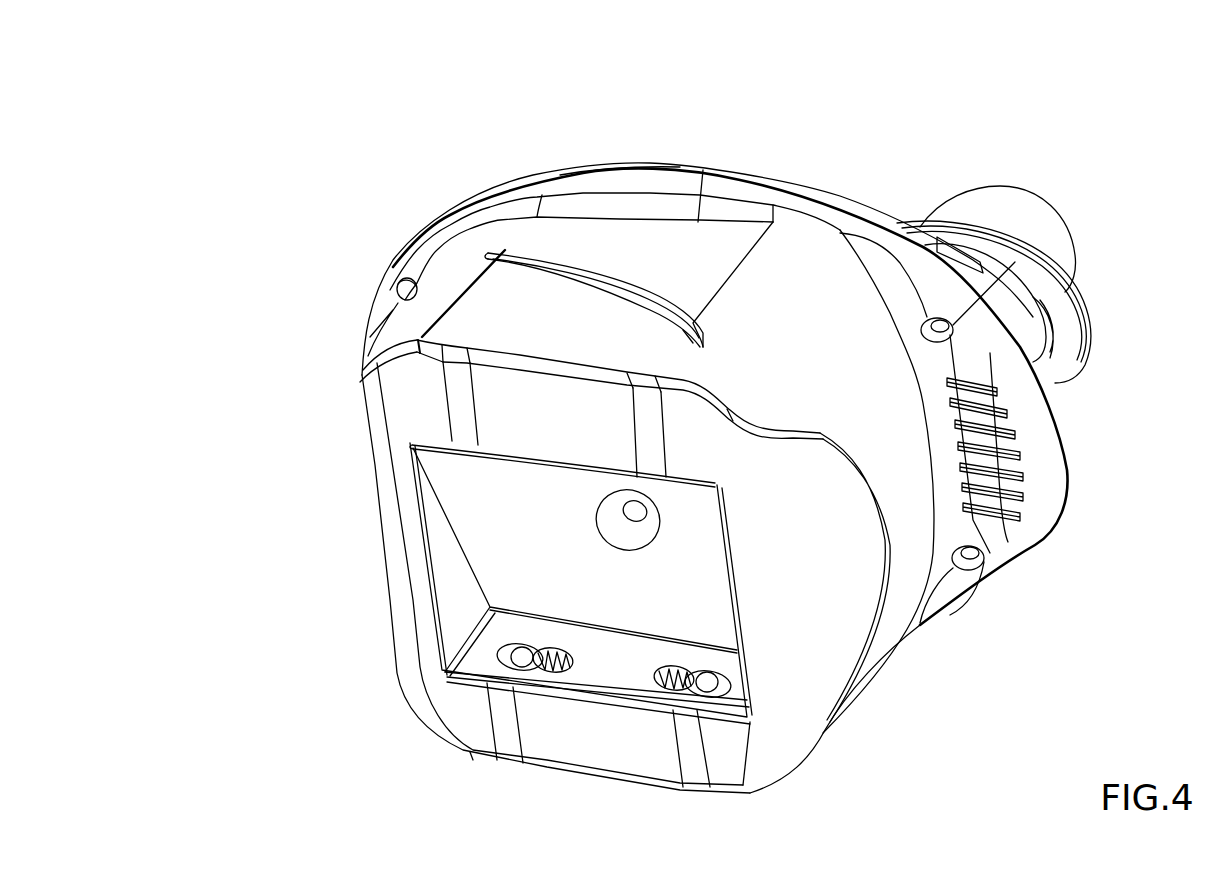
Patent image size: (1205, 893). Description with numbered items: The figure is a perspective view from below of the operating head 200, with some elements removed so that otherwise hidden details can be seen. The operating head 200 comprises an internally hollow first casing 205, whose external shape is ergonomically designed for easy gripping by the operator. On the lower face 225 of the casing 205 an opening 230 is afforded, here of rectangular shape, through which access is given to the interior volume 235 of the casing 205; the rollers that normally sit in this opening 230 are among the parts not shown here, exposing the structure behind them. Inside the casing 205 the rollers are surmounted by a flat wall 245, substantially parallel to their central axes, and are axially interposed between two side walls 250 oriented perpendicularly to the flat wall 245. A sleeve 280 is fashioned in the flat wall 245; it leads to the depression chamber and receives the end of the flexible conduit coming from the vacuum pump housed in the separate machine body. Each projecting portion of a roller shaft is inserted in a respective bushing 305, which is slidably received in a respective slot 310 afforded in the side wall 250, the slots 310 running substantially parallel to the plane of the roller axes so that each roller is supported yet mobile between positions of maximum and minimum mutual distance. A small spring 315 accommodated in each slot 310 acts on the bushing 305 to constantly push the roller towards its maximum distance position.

The operating head 200 is at (355, 272).
The first casing 205 is at (622, 183).
The lower face 225 is at (487, 387).
The opening 230 is at (435, 643).
The interior volume 235 is at (556, 555).
The flat wall 245 is at (697, 537).
The side walls 250 is at (623, 640).
The sleeve 280 is at (630, 505).
The bushing 305 is at (495, 662).
The slot 310 is at (548, 647).
The spring 315 is at (553, 665).